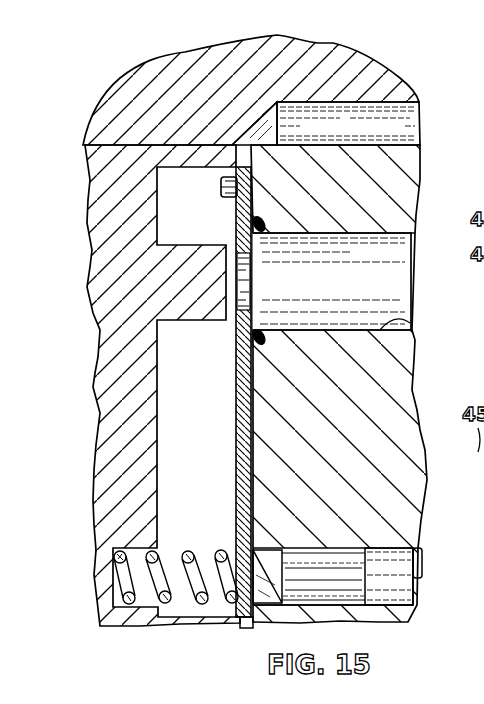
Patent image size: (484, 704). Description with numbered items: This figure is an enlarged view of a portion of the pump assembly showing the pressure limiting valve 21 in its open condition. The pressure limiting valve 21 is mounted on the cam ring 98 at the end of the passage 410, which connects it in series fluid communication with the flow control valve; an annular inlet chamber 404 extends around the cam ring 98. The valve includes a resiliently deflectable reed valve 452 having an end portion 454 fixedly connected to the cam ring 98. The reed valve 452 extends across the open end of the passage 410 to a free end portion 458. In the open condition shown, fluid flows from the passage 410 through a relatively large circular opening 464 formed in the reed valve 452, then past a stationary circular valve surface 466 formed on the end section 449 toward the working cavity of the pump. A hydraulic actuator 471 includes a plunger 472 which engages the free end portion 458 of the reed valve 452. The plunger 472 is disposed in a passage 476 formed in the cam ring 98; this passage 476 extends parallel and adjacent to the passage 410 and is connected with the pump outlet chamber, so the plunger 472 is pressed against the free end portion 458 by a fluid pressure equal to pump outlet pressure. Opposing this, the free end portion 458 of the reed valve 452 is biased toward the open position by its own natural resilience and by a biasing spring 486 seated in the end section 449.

The pressure limiting valve 21 is at (238, 141).
The cam ring 98 is at (401, 190).
The annular inlet chamber 404 is at (400, 138).
The passage 410 is at (410, 322).
The end section 449 is at (96, 195).
The reed valve 452 is at (225, 458).
The end portion 454 is at (246, 175).
The free end portion 458 is at (246, 629).
The circular opening 464 is at (267, 283).
The stationary circular valve surface 466 is at (265, 283).
The hydraulic actuator 471 is at (357, 611).
The plunger 472 is at (350, 580).
The passage 476 is at (423, 574).
The biasing spring 486 is at (157, 603).